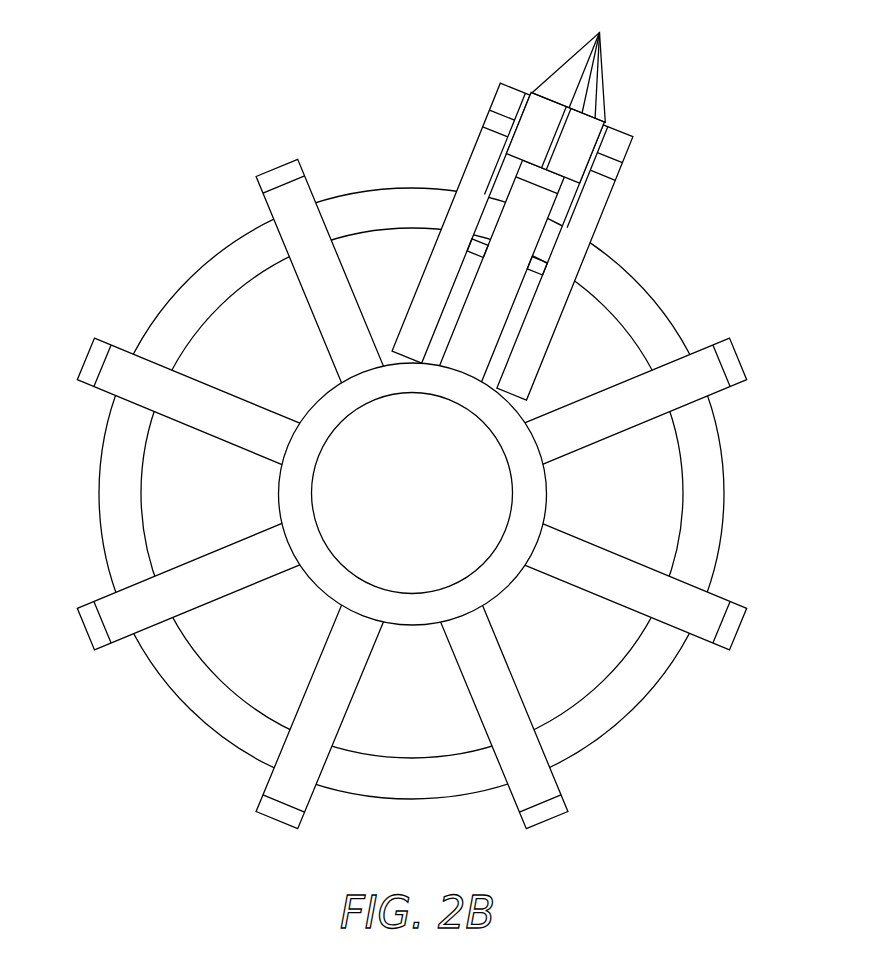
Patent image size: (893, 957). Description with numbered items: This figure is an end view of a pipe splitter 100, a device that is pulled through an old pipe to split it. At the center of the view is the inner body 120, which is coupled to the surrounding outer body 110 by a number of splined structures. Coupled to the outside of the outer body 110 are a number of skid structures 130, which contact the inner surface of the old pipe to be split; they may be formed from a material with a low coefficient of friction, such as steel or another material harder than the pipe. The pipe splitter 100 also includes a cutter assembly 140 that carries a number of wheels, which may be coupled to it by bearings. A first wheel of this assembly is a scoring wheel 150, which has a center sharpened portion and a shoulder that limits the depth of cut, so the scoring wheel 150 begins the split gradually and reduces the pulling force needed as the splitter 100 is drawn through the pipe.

The pipe splitter 100 is at (428, 431).
The outer body 110 is at (197, 307).
The inner body 120 is at (546, 488).
The skid structures 130 is at (733, 360).
The cutter assembly 140 is at (590, 193).
The scoring wheel 150 is at (537, 107).